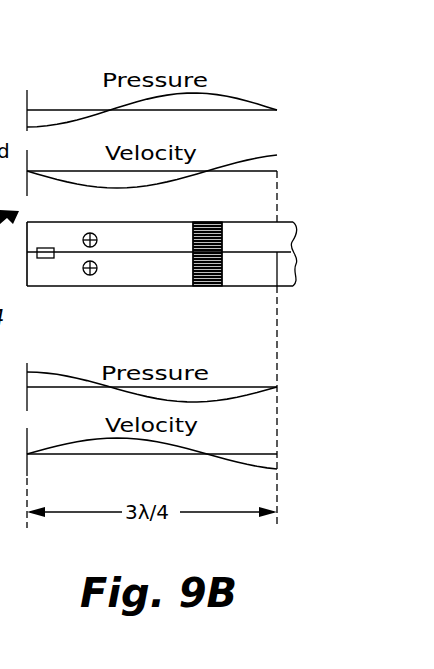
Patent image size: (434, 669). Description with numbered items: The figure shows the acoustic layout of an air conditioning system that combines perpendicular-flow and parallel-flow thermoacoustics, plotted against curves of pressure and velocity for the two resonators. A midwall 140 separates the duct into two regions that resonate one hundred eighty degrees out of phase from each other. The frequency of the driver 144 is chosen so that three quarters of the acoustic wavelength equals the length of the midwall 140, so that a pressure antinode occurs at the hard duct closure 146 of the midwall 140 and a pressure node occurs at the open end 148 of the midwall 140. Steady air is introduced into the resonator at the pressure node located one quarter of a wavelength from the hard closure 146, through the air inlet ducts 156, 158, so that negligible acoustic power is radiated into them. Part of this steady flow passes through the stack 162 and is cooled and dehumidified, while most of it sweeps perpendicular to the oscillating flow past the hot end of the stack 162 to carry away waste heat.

The midwall 140 is at (238, 253).
The driver 144 is at (40, 258).
The hard duct closure 146 is at (24, 272).
The open end 148 is at (272, 248).
The air inlet duct 156 is at (92, 275).
The air inlet duct 158 is at (97, 233).
The stack 162 is at (208, 232).